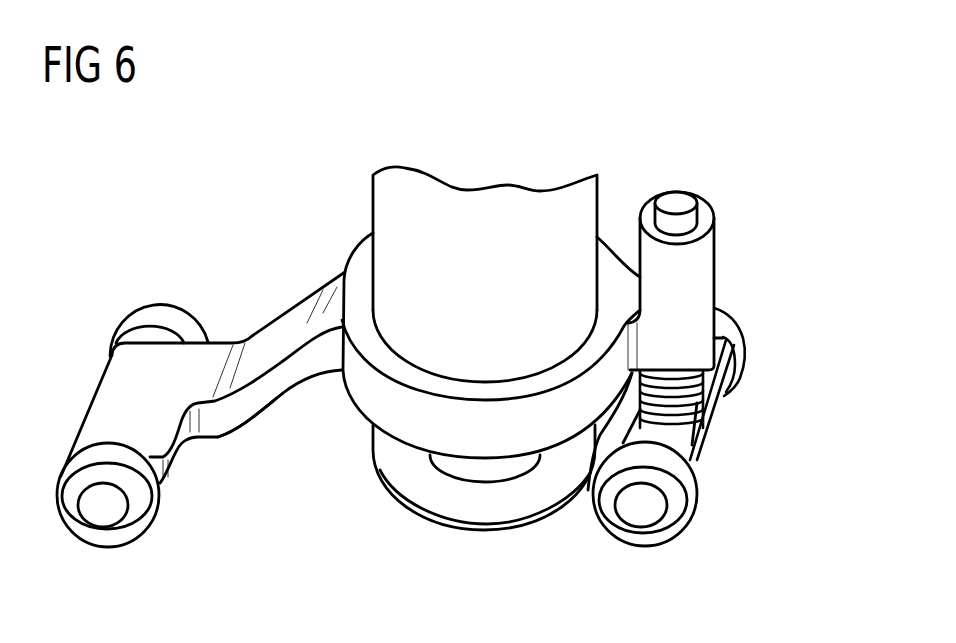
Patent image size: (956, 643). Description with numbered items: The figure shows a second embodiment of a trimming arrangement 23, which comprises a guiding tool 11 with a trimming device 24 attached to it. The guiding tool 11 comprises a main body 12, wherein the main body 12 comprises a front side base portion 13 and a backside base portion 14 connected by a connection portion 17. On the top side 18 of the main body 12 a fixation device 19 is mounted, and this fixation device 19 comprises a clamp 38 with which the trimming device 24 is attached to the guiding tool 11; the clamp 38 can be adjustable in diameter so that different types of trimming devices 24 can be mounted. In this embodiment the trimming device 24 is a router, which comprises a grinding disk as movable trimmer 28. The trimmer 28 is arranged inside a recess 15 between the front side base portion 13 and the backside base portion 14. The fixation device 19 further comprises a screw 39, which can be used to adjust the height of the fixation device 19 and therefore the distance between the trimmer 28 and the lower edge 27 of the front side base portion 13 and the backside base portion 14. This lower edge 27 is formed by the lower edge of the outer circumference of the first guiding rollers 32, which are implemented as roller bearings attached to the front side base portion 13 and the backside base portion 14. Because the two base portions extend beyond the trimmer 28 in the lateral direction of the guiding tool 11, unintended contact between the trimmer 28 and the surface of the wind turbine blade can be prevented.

The guiding tool 11 is at (228, 363).
The main body 12 is at (257, 340).
The front side base portion 13 is at (688, 432).
The backside base portion 14 is at (127, 397).
The recess 15 is at (312, 427).
The connection portion 17 is at (332, 284).
The top side 18 is at (715, 340).
The fixation device 19 is at (713, 280).
The trimming arrangement 23 is at (720, 147).
The trimming device 24 is at (482, 207).
The lower edge 27 is at (680, 443).
The trimmer 28 is at (490, 507).
The first guiding rollers 32 is at (152, 314).
The clamp 38 is at (700, 257).
The screw 39 is at (672, 203).